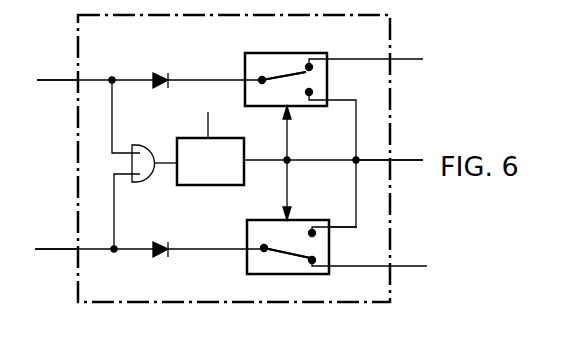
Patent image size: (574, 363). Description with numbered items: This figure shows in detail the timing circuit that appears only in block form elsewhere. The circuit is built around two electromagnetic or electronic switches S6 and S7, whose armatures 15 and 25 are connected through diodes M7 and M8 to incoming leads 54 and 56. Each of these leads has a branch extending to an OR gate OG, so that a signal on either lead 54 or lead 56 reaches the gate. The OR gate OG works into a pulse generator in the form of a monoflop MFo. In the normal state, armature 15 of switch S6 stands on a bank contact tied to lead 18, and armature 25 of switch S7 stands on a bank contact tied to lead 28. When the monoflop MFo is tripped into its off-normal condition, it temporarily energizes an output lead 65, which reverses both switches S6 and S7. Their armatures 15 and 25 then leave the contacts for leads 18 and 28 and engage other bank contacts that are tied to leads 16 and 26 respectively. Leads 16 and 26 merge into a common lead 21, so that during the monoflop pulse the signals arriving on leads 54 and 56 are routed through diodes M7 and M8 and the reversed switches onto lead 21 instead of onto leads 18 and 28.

The lead 54 is at (47, 78).
The lead 56 is at (50, 248).
The diode M7 is at (153, 74).
The diode M8 is at (157, 255).
The OR gate OG is at (137, 143).
The monoflop MFo is at (203, 187).
The output lead 65 is at (264, 160).
The armature 15 is at (289, 72).
The electromagnetic or electronic switch S6 is at (243, 53).
The lead 18 is at (411, 58).
The lead 16 is at (355, 99).
The lead 21 is at (414, 158).
The armature 25 is at (290, 258).
The electromagnetic or electronic switch S7 is at (318, 274).
The lead 26 is at (357, 228).
The lead 28 is at (418, 265).